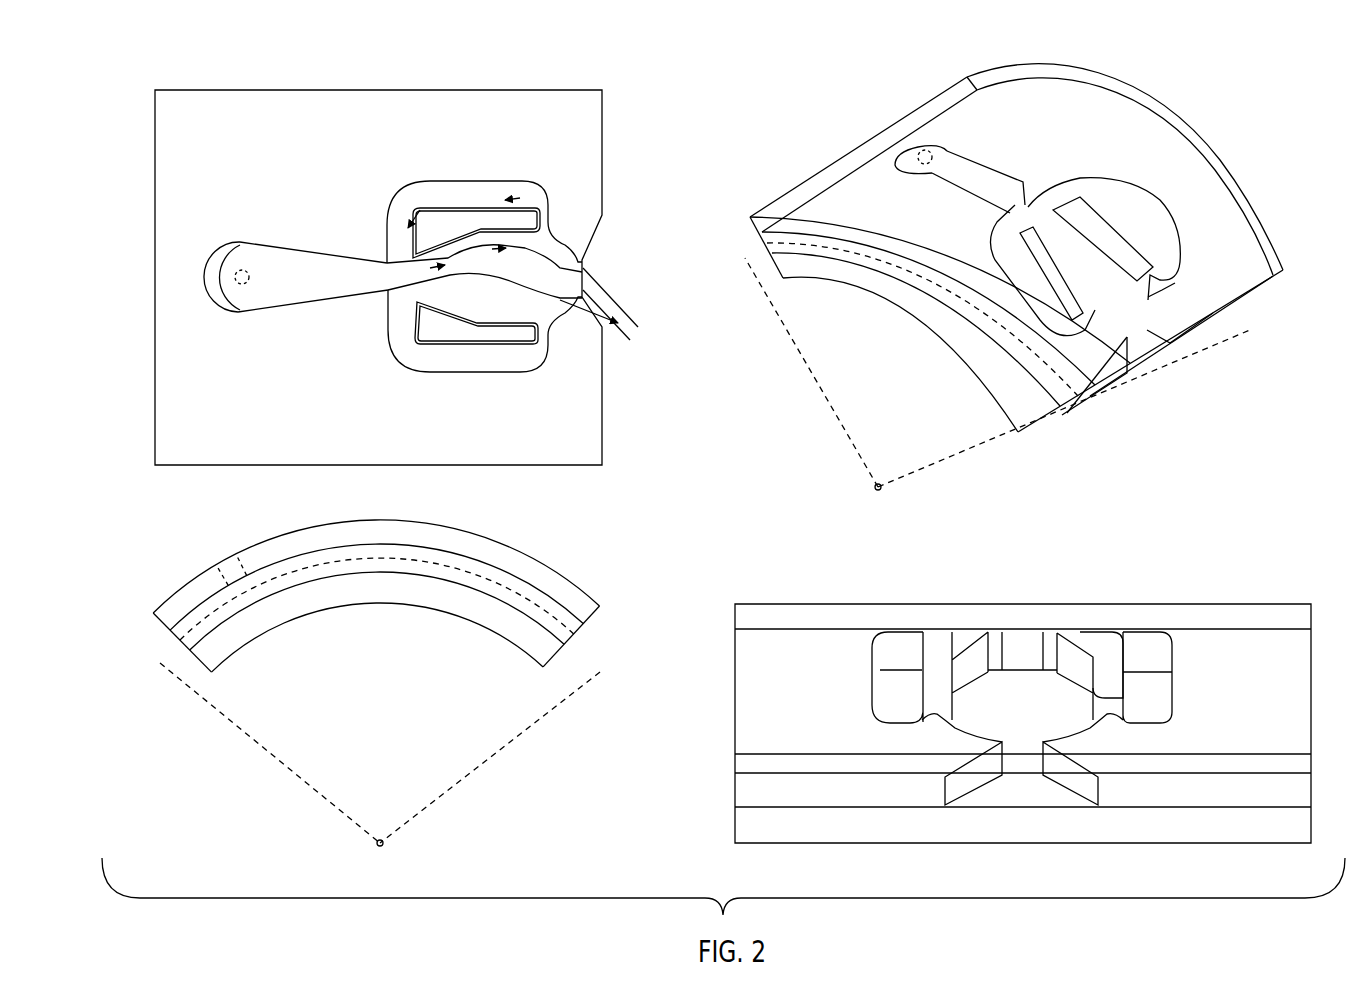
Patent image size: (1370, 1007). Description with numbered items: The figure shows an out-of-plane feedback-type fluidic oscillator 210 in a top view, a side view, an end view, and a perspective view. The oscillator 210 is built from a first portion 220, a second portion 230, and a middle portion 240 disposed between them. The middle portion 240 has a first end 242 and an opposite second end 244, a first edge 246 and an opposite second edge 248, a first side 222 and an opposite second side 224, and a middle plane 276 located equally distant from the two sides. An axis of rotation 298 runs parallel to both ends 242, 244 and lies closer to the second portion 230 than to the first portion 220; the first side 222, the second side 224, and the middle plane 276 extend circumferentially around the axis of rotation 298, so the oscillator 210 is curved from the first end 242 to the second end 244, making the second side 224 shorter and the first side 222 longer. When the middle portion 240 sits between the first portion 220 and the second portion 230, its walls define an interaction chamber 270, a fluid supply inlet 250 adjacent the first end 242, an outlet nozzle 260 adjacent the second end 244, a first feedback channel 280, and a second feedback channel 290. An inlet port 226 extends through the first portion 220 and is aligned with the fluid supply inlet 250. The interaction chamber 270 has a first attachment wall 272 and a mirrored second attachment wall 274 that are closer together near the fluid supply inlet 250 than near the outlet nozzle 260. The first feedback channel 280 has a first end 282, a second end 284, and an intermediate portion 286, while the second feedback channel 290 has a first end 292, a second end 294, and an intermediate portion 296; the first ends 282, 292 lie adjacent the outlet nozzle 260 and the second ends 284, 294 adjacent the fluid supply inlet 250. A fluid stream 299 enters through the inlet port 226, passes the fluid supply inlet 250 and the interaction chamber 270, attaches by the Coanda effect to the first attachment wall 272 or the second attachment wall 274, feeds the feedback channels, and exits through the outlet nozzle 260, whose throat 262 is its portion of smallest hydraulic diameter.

The out-of-plane feedback-type fluidic oscillator 210 is at (575, 75).
The first portion 220 is at (1040, 78).
The first side 222 is at (173, 357).
The second side 224 is at (832, 260).
The inlet port 226 is at (235, 272).
The second portion 230 is at (848, 276).
The middle portion 240 is at (245, 125).
The first end 242 is at (155, 252).
The second end 244 is at (602, 162).
The first edge 246 is at (415, 466).
The second edge 248 is at (385, 90).
The fluid supply inlet 250 is at (268, 270).
The outlet nozzle 260 is at (588, 268).
The throat 262 is at (600, 283).
The interaction chamber 270 is at (455, 258).
The first attachment wall 272 is at (473, 333).
The second attachment wall 274 is at (505, 232).
The middle plane 276 is at (1050, 435).
The first feedback channel 280 is at (452, 347).
The first end of first feedback channel 282 is at (548, 355).
The second end of first feedback channel 284 is at (395, 322).
The intermediate portion of first feedback channel 286 is at (490, 355).
The second feedback channel 290 is at (450, 200).
The first end of second feedback channel 292 is at (535, 215).
The second end of second feedback channel 294 is at (385, 222).
The intermediate portion of second feedback channel 296 is at (481, 200).
The axis of rotation 298 is at (378, 846).
The fluid stream 299 is at (452, 266).